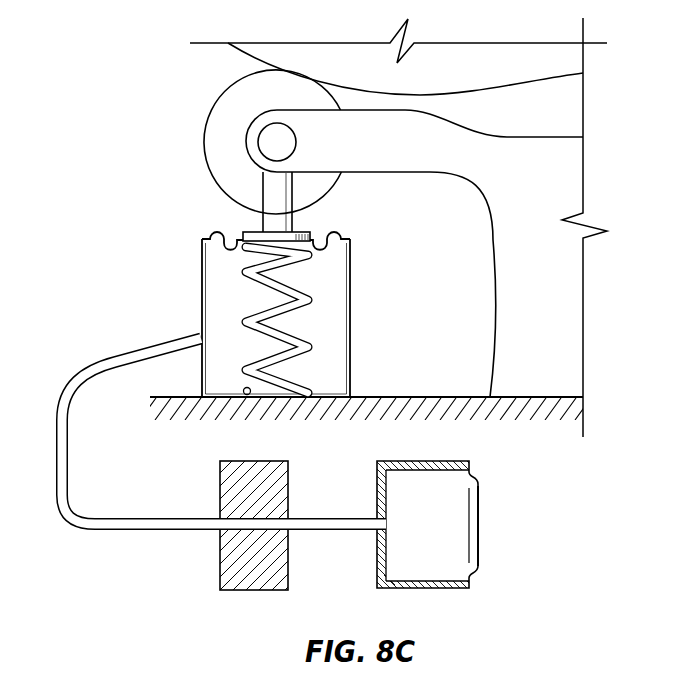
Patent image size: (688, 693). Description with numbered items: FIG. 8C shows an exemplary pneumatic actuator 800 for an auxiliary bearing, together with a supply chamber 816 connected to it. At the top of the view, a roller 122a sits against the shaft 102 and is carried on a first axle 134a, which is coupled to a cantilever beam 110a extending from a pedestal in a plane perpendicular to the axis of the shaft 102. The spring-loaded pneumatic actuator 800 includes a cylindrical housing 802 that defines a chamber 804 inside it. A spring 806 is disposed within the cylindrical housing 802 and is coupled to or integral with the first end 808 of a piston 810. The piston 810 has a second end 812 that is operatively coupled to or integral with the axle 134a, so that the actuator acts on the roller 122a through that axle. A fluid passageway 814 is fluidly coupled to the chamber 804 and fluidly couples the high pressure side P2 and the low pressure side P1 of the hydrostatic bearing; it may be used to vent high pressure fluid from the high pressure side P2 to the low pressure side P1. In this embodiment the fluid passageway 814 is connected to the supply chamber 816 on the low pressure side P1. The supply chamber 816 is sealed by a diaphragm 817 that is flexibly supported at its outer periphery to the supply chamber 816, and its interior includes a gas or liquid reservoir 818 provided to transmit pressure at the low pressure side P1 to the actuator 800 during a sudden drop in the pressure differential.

The shaft 102 is at (487, 96).
The cantilever beam 110a is at (428, 160).
The roller 122a is at (233, 90).
The first axle 134a is at (257, 145).
The pneumatic actuator 800 is at (138, 238).
The cylindrical housing 802 is at (202, 287).
The chamber 804 is at (333, 277).
The spring 806 is at (312, 298).
The first end of piston 808 is at (300, 229).
The piston 810 is at (290, 195).
The second end of piston 812 is at (261, 173).
The fluid passageway 814 is at (108, 357).
The supply chamber 816 is at (433, 462).
The diaphragm 817 is at (478, 513).
The reservoir 818 is at (448, 559).
The low pressure side P1 is at (361, 491).
The high pressure side P2 is at (194, 489).